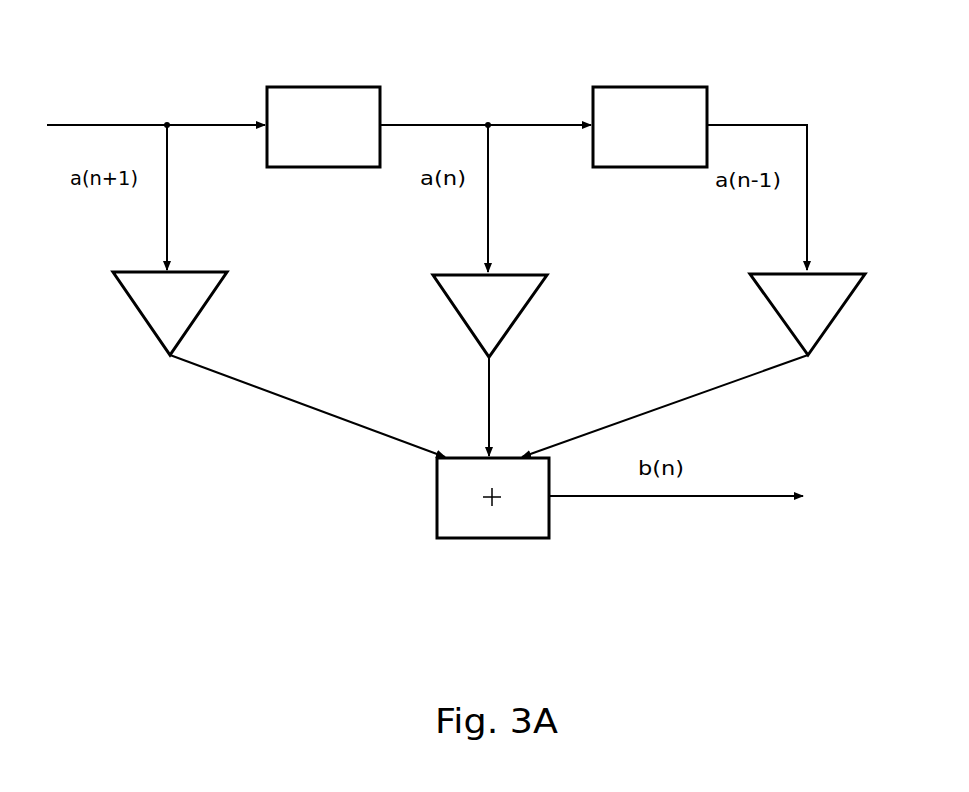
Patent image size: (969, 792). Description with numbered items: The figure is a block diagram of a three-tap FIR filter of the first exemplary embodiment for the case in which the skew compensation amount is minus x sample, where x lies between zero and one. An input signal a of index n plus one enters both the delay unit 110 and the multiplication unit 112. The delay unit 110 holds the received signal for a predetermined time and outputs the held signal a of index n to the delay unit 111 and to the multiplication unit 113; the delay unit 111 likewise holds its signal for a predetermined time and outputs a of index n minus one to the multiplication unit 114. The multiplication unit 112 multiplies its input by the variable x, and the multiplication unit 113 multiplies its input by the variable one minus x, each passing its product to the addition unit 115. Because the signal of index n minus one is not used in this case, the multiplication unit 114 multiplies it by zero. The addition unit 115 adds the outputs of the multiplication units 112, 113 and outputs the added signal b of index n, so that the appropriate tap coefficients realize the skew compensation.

The delay unit 110 is at (310, 87).
The delay unit 111 is at (648, 87).
The multiplication unit 112 is at (200, 272).
The multiplication unit 113 is at (520, 275).
The multiplication unit 114 is at (835, 274).
The addition unit 115 is at (433, 497).